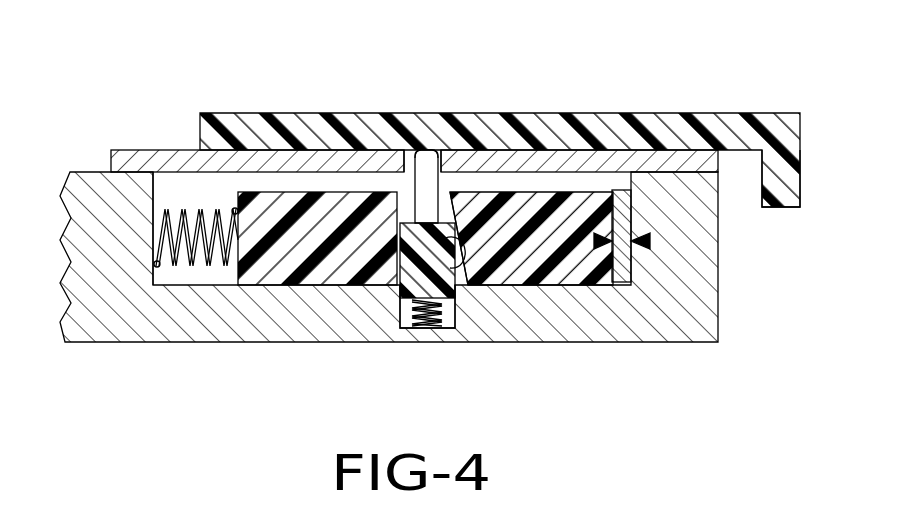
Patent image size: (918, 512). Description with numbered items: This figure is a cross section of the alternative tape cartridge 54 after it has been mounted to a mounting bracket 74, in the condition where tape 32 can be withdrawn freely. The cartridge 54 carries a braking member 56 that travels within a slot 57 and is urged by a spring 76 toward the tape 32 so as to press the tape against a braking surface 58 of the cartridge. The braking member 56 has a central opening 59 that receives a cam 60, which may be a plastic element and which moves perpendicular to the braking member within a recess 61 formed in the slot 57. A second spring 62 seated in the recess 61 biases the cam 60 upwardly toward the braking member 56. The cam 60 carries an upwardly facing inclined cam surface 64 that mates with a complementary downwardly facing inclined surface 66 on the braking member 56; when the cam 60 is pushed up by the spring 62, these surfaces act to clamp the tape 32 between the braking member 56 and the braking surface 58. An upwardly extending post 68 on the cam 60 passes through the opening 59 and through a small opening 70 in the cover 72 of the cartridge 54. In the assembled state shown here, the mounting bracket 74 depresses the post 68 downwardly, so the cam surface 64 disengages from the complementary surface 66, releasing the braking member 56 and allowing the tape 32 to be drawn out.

The tape 32 is at (617, 285).
The tape cartridge 54 is at (118, 152).
The braking member 56 is at (570, 202).
The slot 57 is at (153, 193).
The braking surface 58 is at (633, 258).
The central opening 59 is at (403, 186).
The cam 60 is at (398, 240).
The recess 61 is at (415, 323).
The spring 62 is at (430, 318).
The inclined cam surface 64 is at (460, 243).
The inclined surface 66 is at (463, 279).
The post 68 is at (427, 163).
The opening 70 is at (413, 148).
The cover 72 is at (261, 156).
The mounting bracket 74 is at (757, 110).
The spring 76 is at (207, 268).